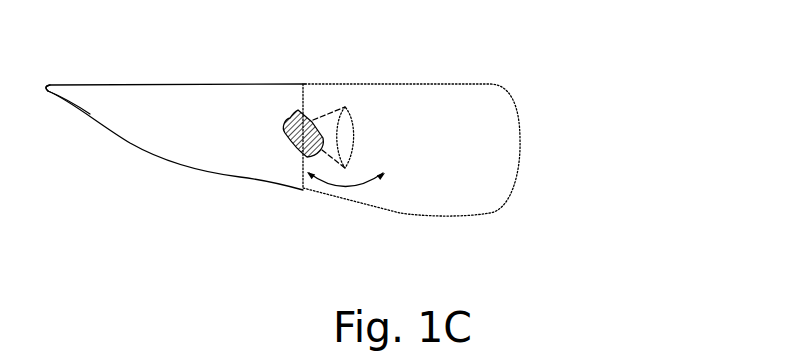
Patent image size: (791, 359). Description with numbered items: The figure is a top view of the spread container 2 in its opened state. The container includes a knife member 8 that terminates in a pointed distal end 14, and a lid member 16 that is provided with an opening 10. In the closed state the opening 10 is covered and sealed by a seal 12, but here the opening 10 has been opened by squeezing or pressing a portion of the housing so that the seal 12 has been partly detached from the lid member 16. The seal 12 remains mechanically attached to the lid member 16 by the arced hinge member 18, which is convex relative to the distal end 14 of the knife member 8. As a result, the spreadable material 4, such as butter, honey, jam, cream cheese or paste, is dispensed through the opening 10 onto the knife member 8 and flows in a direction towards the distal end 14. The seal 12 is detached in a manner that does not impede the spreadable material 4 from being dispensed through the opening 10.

The spread container 2 is at (320, 58).
The spreadable material 4 is at (292, 130).
The knife member 8 is at (148, 163).
The opening 10 is at (330, 120).
The seal 12 is at (342, 112).
The distal end 14 is at (63, 94).
The lid member 16 is at (414, 92).
The hinge member 18 is at (360, 132).